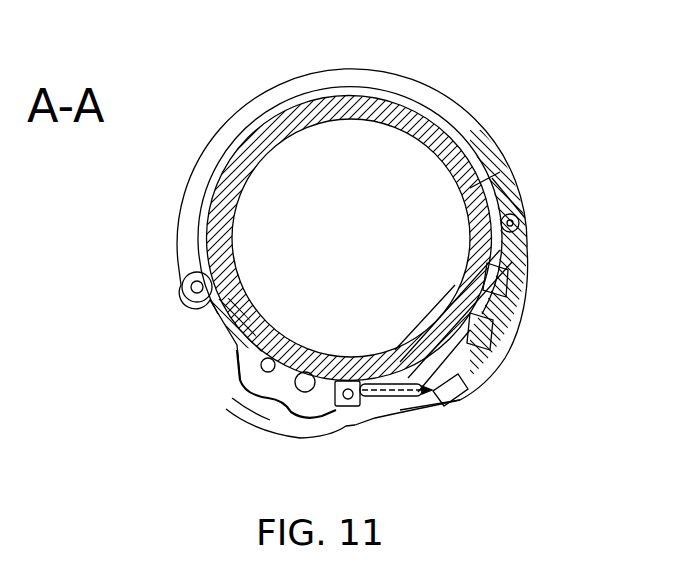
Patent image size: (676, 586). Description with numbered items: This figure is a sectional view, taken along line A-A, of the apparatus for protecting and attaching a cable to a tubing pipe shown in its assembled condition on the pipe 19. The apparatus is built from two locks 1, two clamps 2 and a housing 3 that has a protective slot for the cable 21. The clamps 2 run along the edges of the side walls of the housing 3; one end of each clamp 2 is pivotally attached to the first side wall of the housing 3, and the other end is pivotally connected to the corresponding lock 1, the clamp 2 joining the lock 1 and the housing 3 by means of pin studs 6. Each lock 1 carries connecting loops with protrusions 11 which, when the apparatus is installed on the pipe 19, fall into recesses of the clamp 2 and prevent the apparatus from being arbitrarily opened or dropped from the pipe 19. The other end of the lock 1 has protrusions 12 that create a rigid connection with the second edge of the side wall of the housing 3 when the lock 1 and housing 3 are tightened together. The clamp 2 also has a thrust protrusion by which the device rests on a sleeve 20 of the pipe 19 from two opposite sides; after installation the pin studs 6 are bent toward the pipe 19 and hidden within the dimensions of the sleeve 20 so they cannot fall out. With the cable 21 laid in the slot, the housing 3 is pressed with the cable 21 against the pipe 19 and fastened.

The lock 1 is at (517, 328).
The clamp 2 is at (397, 103).
The housing 3 is at (396, 412).
The pin stud 6 is at (184, 292).
The protrusion 11 is at (507, 175).
The protrusion 12 is at (462, 403).
The pipe 19 is at (318, 111).
The sleeve 20 is at (240, 146).
The cable 21 is at (322, 432).